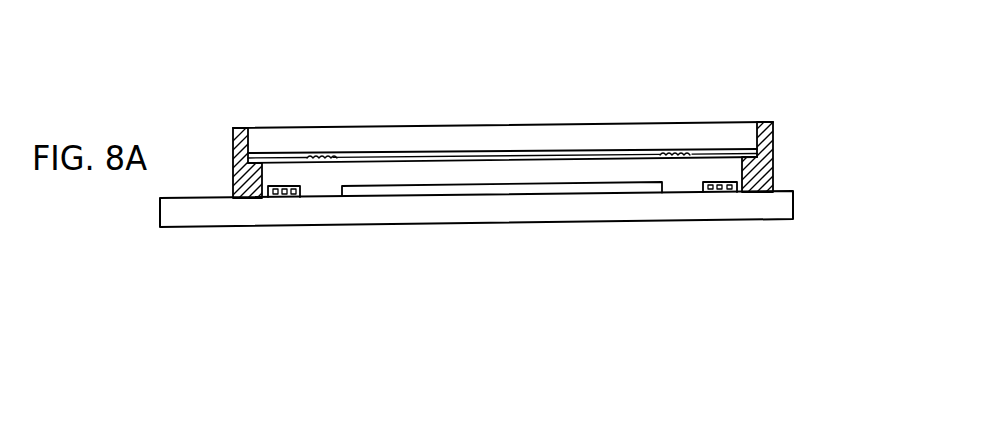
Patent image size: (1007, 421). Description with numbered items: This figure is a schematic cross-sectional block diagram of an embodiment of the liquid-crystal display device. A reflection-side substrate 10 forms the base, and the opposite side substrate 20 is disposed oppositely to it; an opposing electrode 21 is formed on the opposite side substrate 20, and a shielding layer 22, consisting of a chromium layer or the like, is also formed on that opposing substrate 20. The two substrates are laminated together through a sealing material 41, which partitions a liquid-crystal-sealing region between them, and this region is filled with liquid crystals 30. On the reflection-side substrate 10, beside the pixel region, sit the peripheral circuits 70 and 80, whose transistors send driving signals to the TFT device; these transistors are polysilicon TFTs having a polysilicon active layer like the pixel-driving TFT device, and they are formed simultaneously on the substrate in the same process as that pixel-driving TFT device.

The base substrate 10 is at (777, 209).
The opposite side substrate 20 is at (704, 132).
The opposing electrode 21 is at (433, 152).
The shielding layer 22 is at (323, 155).
The liquid crystals 30 is at (505, 175).
The sealing material 41 is at (789, 120).
The peripheral circuit 70 is at (278, 184).
The peripheral circuit 80 is at (723, 193).